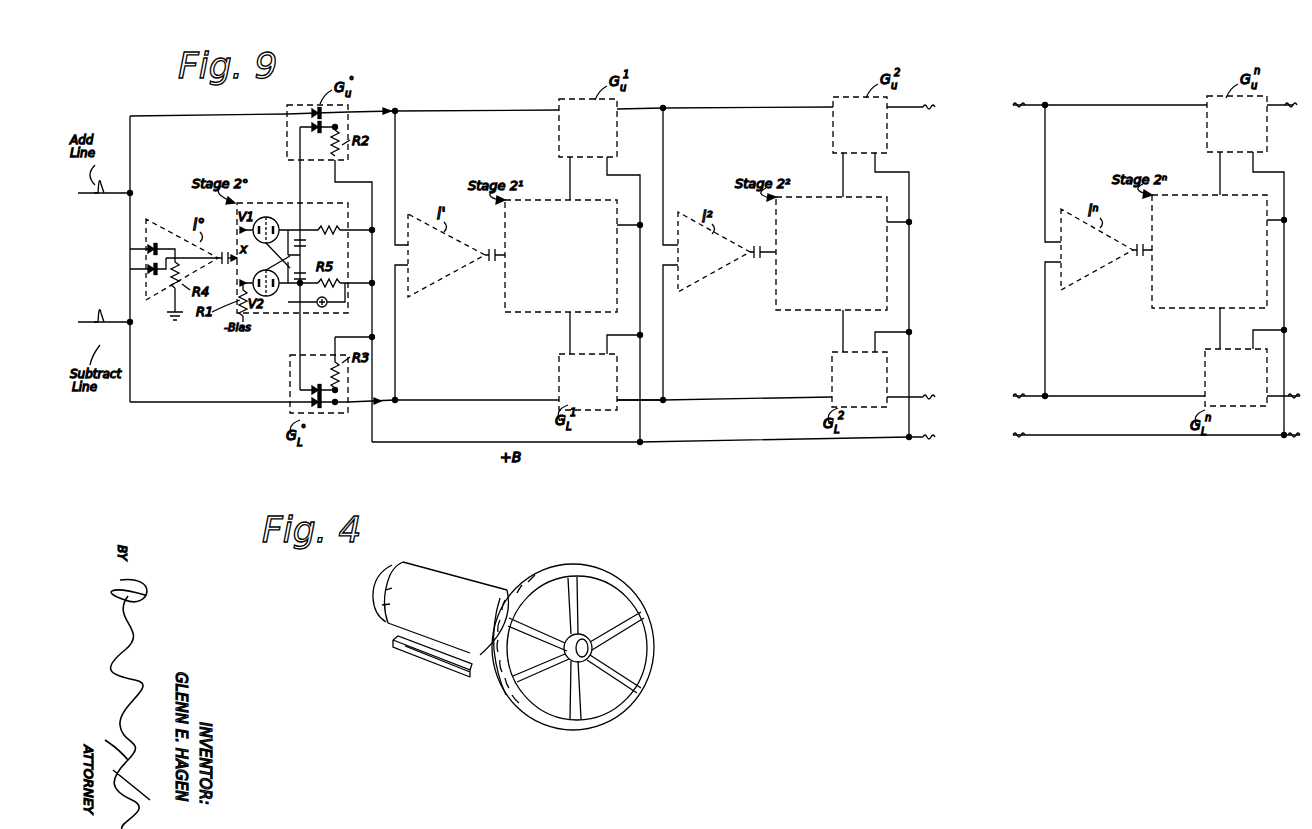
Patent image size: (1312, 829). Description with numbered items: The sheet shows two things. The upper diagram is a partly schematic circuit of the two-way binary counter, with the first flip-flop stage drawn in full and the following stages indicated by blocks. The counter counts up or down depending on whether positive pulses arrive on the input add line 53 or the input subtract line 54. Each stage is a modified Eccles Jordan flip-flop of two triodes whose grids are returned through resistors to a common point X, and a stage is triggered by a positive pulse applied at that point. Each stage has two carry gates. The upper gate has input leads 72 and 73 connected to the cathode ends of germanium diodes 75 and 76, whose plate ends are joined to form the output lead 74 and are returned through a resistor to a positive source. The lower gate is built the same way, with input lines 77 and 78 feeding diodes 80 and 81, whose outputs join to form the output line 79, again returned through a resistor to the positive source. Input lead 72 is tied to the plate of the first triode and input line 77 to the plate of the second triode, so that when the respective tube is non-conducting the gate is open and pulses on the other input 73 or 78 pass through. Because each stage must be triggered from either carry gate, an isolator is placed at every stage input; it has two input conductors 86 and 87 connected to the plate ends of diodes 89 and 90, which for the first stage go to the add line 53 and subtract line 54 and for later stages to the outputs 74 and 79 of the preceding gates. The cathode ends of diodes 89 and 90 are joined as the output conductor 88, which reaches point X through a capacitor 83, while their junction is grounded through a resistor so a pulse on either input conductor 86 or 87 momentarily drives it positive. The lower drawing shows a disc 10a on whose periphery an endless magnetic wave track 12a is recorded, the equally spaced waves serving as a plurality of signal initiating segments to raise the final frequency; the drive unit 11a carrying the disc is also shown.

In FIG. 9, the input add line 53 is at (80, 195).
In FIG. 9, the input subtract line 54 is at (90, 322).
In FIG. 9, the upper gate input lead 72 is at (300, 188).
In FIG. 9, the upper gate input lead 73 is at (256, 112).
In FIG. 9, the upper gate output lead 74 is at (381, 110).
In FIG. 9, the germanium diode 75 is at (315, 131).
In FIG. 9, the germanium diode 76 is at (314, 109).
In FIG. 9, the lower gate input line 77 is at (300, 334).
In FIG. 9, the lower gate input line 78 is at (208, 404).
In FIG. 9, the lower gate output line 79 is at (384, 402).
In FIG. 9, the germanium diode 80 is at (314, 390).
In FIG. 9, the germanium diode 81 is at (319, 407).
In FIG. 9, the capacitor 83 is at (228, 262).
In FIG. 9, the isolator input conductor 86 is at (130, 207).
In FIG. 9, the isolator input conductor 87 is at (130, 284).
In FIG. 9, the isolator output conductor 88 is at (218, 256).
In FIG. 9, the germanium diode 89 is at (154, 244).
In FIG. 9, the germanium diode 90 is at (157, 272).
In FIG. 4, the disc 10a is at (588, 702).
In FIG. 4, the motor 11a is at (438, 621).
In FIG. 4, the endless magnetic wave track 12a is at (500, 682).